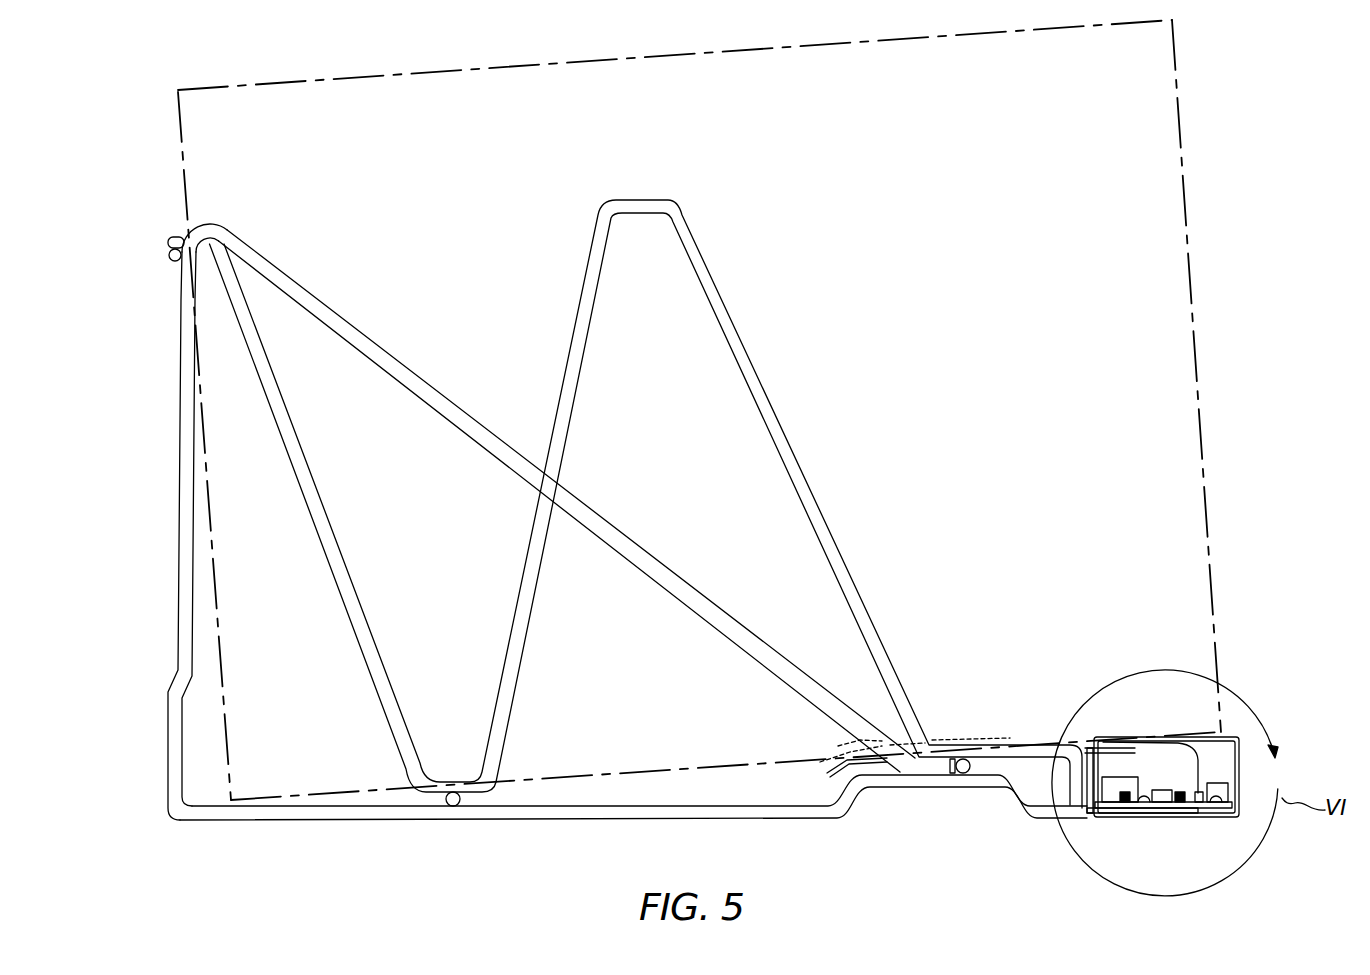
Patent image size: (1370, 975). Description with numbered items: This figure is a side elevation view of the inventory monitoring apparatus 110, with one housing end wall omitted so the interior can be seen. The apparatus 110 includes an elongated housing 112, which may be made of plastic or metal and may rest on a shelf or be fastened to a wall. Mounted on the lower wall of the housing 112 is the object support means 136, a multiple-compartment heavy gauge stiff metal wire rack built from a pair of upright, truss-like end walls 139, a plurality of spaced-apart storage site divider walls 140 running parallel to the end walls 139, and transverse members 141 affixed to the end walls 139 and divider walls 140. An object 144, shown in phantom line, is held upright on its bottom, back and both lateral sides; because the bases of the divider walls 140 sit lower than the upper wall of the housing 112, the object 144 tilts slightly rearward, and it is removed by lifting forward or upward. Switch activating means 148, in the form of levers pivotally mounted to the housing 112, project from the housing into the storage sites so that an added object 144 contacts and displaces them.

The inventory monitoring apparatus 110 is at (575, 542).
The elongated housing 112 is at (1160, 818).
The object support means 136 is at (178, 562).
The end walls 139 is at (272, 814).
The storage site divider walls 140 is at (327, 548).
The transverse members 141 is at (169, 257).
The objects 144 is at (1190, 244).
The switch activating means 148 is at (832, 750).